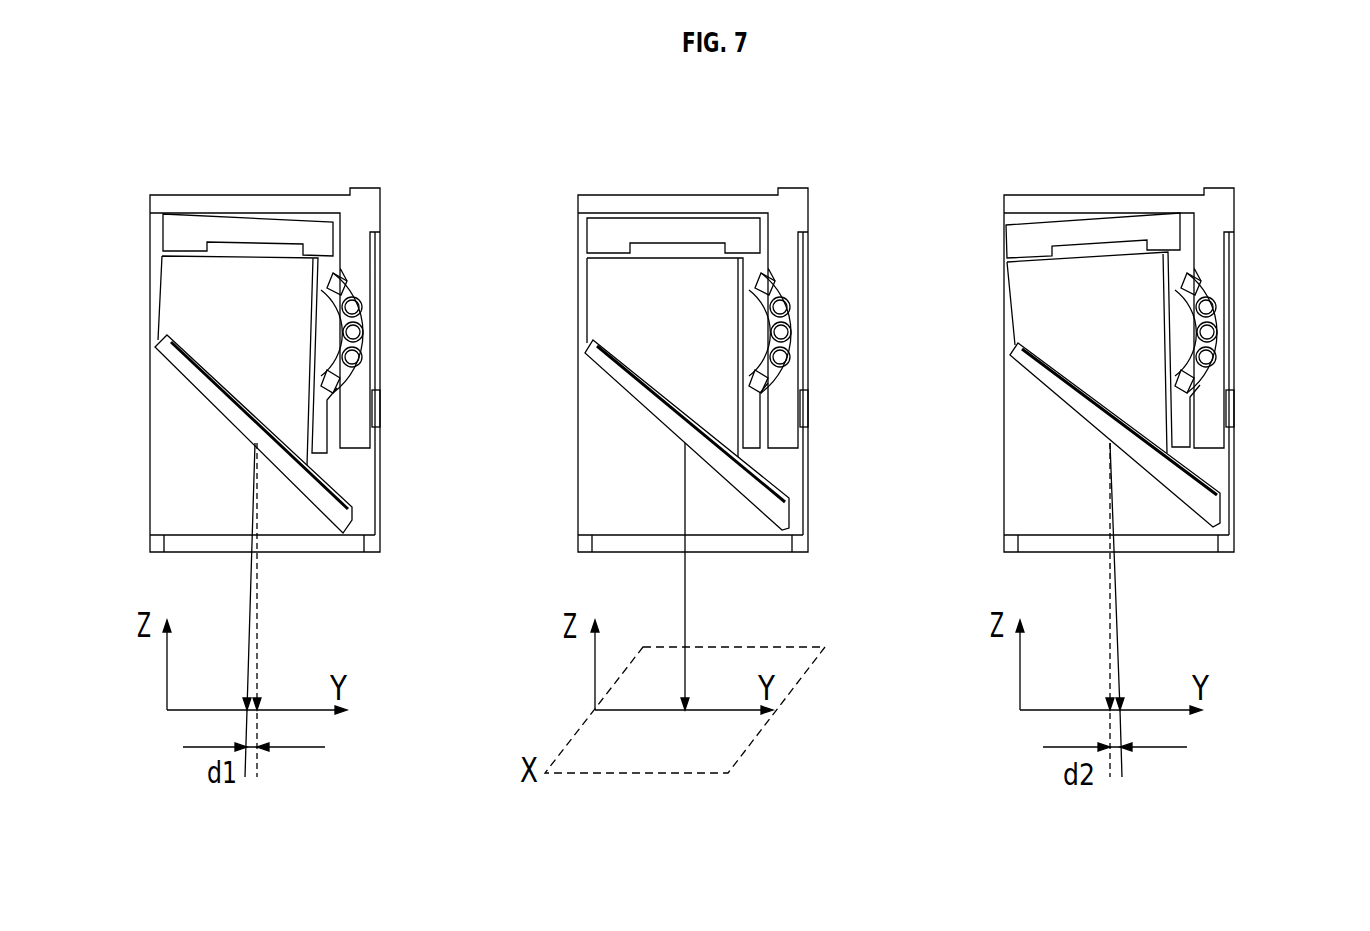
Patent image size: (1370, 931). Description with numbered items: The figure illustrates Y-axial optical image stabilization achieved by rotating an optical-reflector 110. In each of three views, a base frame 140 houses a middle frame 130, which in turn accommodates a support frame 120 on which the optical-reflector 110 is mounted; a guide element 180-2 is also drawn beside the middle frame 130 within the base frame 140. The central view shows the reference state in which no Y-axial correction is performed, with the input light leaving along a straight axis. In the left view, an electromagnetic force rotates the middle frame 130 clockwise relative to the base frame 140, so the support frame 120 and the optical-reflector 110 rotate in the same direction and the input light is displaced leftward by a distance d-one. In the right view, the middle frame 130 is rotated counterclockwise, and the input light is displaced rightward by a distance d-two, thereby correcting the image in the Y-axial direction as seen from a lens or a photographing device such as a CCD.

The optical-reflector 110 is at (197, 382).
The support frame 120 is at (185, 295).
The middle frame 130 is at (177, 233).
The base frame 140 is at (202, 202).
The second ball guide unit 180-2 is at (355, 305).